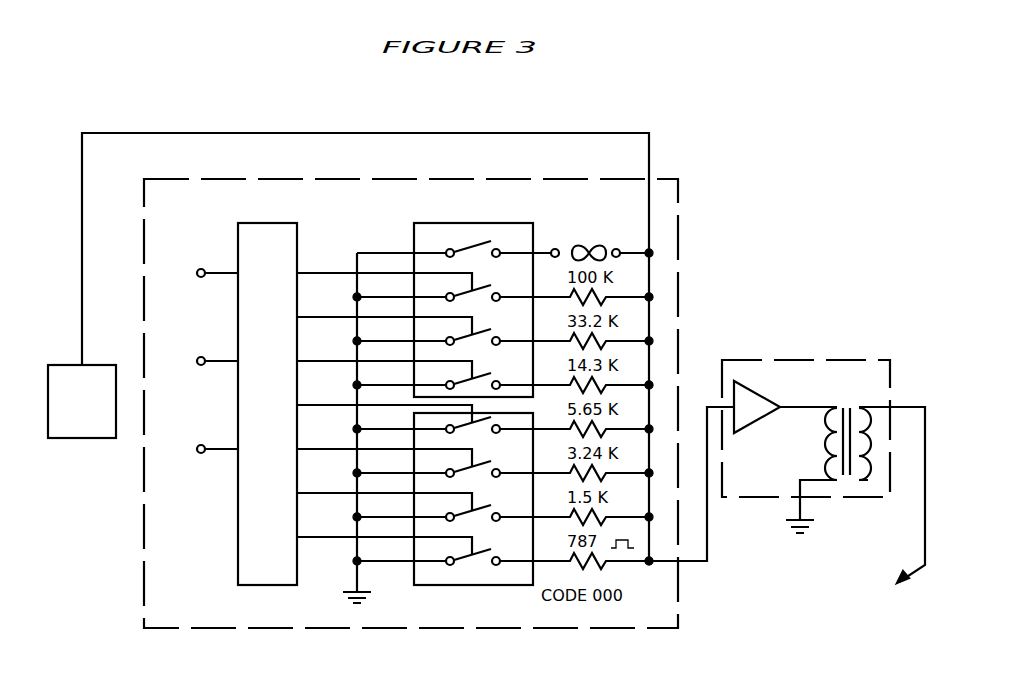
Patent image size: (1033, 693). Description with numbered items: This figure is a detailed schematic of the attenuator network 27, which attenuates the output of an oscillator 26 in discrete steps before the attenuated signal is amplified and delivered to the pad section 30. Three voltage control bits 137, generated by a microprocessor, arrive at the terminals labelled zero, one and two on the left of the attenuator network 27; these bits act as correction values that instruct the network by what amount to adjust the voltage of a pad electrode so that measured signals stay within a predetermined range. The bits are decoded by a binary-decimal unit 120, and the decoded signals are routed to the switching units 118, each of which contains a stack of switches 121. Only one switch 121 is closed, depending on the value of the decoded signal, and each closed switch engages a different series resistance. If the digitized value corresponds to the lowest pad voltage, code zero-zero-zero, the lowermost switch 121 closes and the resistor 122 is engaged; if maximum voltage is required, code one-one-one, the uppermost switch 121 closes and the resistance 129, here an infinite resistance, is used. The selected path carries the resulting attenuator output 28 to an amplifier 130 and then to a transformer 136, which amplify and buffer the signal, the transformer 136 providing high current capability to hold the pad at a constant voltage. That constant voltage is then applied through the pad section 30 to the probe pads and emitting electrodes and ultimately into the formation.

The oscillator 26 is at (95, 413).
The attenuator network 27 is at (228, 628).
The attenuator output 28 is at (856, 497).
The pad section 30 is at (840, 613).
The switching units 118 is at (415, 222).
The binary-decimal unit 120 is at (238, 560).
The switch 121 is at (473, 247).
The resistor 122 is at (607, 568).
The resistance 129 is at (607, 247).
The amplifier 130 is at (748, 374).
The transformer 136 is at (845, 398).
The voltage control bits 137 is at (219, 268).